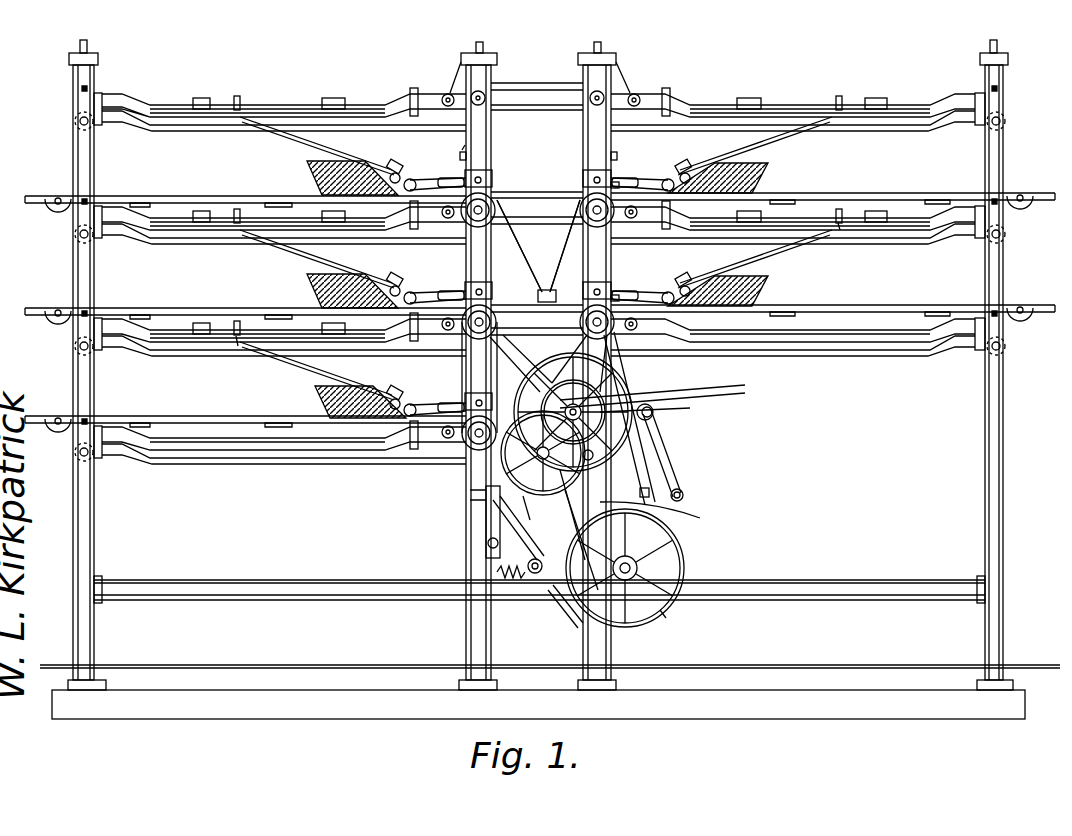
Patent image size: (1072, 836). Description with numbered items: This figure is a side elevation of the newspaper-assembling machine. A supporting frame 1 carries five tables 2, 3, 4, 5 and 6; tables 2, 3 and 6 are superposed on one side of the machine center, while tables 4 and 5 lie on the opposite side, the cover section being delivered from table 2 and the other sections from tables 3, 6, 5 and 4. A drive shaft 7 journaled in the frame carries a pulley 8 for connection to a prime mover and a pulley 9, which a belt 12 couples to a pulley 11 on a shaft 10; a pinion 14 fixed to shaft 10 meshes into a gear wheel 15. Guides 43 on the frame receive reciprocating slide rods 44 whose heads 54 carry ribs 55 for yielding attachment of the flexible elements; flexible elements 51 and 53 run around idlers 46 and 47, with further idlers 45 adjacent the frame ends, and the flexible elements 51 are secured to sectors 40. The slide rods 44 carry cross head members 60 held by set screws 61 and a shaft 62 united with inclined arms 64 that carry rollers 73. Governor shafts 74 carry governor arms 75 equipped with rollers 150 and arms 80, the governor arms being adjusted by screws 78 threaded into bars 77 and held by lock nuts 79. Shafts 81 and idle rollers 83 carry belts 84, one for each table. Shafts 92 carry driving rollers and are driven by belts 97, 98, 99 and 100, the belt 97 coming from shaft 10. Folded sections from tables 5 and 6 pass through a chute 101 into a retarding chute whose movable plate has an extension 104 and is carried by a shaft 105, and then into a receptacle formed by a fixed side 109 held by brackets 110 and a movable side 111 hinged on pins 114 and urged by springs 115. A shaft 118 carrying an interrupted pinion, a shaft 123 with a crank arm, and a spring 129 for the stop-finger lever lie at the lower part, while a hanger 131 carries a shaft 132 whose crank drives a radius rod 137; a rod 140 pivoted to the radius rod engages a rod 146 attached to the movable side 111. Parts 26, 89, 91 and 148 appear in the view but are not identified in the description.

The supporting frame 1 is at (210, 120).
The table 2 is at (325, 428).
The table 3 is at (236, 329).
The table 4 is at (842, 328).
The table 5 is at (870, 216).
The table 6 is at (250, 217).
The drive shaft 7 is at (640, 566).
The pulley 8 is at (666, 622).
The pulley 9 is at (470, 470).
The shaft 10 is at (606, 415).
The pulley 11 is at (630, 385).
The belt 12 is at (660, 485).
The pinion 14 is at (690, 388).
The gear wheel 15 is at (565, 505).
The lever bracket 26 is at (486, 532).
The sectors 40 is at (118, 467).
The guides 43 is at (332, 335).
The slide rods 44 is at (880, 231).
The idlers 45 is at (75, 458).
The idlers 46 is at (75, 349).
The idlers 47 is at (1005, 348).
The flexible elements 51 is at (965, 357).
The flexible elements 53 is at (115, 368).
The head 54 is at (195, 323).
The rib 55 is at (724, 98).
The cross head members 60 is at (840, 224).
The set screws 61 is at (840, 208).
The shaft 62 is at (835, 122).
The inclined arms 64 is at (400, 352).
The rollers 73 is at (400, 410).
The governor shafts 74 is at (620, 294).
The governor arms 75 is at (455, 404).
The bars 77 is at (618, 154).
The screws 78 is at (467, 155).
The lock nuts 79 is at (467, 148).
The arms 80 is at (640, 293).
The shafts 81 is at (447, 438).
The idle rollers 83 is at (1033, 316).
The belts 84 is at (905, 304).
The bearing block 89 is at (465, 440).
The pulley 91 is at (488, 205).
The shafts 92 is at (610, 330).
The belt 97 is at (620, 356).
The belt 98 is at (462, 360).
The belt 99 is at (462, 375).
The belts 100 is at (648, 247).
The chute 101 is at (525, 270).
The extension 104 is at (543, 453).
The shaft 105 is at (512, 338).
The fixed side 109 is at (525, 530).
The brackets 110 is at (658, 484).
The movable side 111 is at (584, 540).
The pins 114 is at (572, 632).
The springs 115 is at (515, 578).
The shaft 118 is at (482, 495).
The shaft 123 is at (488, 545).
The spring 129 is at (533, 508).
The hanger 131 is at (655, 416).
The shaft 132 is at (596, 456).
The radius rod 137 is at (675, 470).
The rod 140 is at (685, 497).
The rod 146 is at (653, 512).
The rod 148 is at (656, 408).
The rollers 150 is at (675, 292).